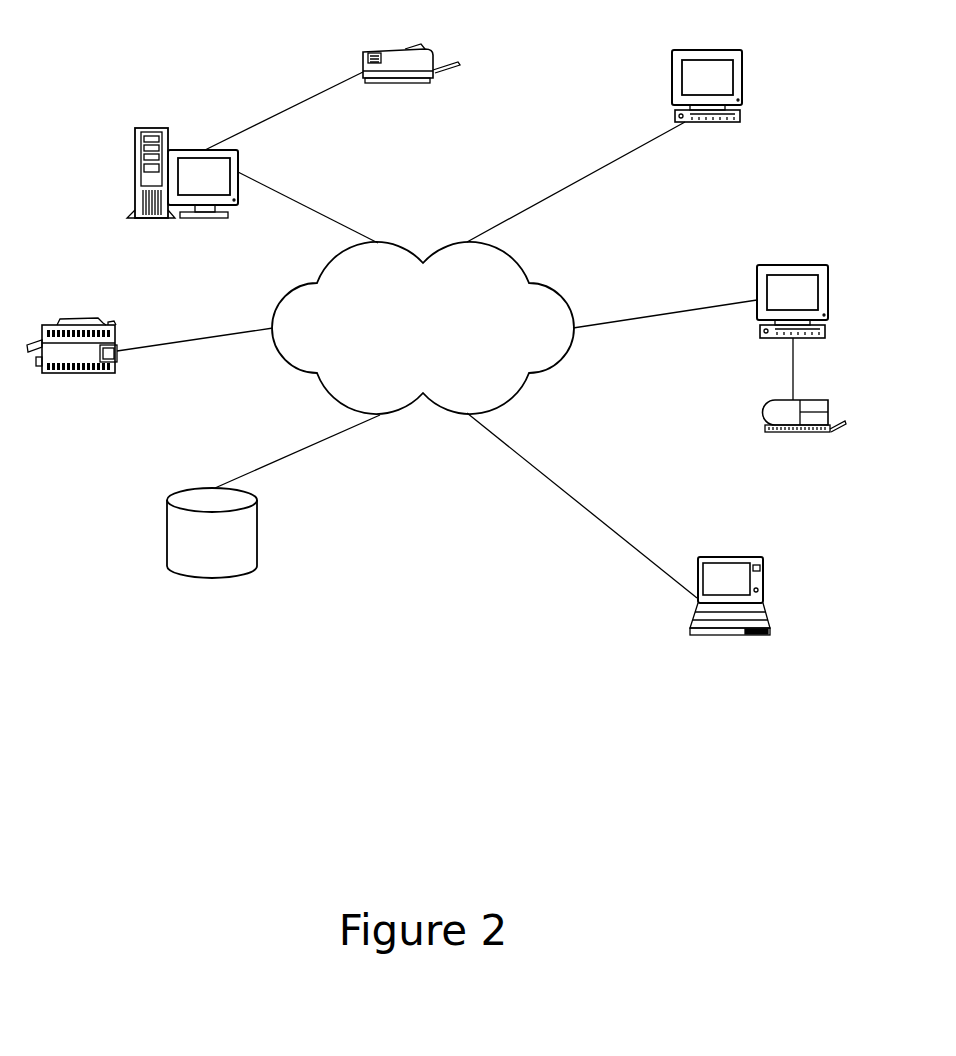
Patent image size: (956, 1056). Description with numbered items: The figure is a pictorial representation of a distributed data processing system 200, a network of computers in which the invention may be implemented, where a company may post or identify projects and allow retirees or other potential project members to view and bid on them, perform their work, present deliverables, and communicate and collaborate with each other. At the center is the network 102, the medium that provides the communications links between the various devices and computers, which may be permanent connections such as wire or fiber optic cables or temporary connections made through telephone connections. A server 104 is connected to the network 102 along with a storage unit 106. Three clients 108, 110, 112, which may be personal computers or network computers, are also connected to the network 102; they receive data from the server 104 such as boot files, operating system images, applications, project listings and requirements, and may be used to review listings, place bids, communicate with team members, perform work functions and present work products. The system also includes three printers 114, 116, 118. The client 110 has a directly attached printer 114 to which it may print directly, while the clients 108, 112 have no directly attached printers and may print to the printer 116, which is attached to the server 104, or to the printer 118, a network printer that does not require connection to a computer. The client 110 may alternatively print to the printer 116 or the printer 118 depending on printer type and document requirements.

The network 102 is at (403, 339).
The server 104 is at (165, 245).
The storage unit 106 is at (190, 618).
The client 108 is at (695, 40).
The client 110 is at (775, 249).
The client 112 is at (713, 534).
The printer 114 is at (776, 465).
The printer 116 is at (383, 111).
The printer 118 is at (60, 403).
The distributed data processing system 200 is at (403, 862).